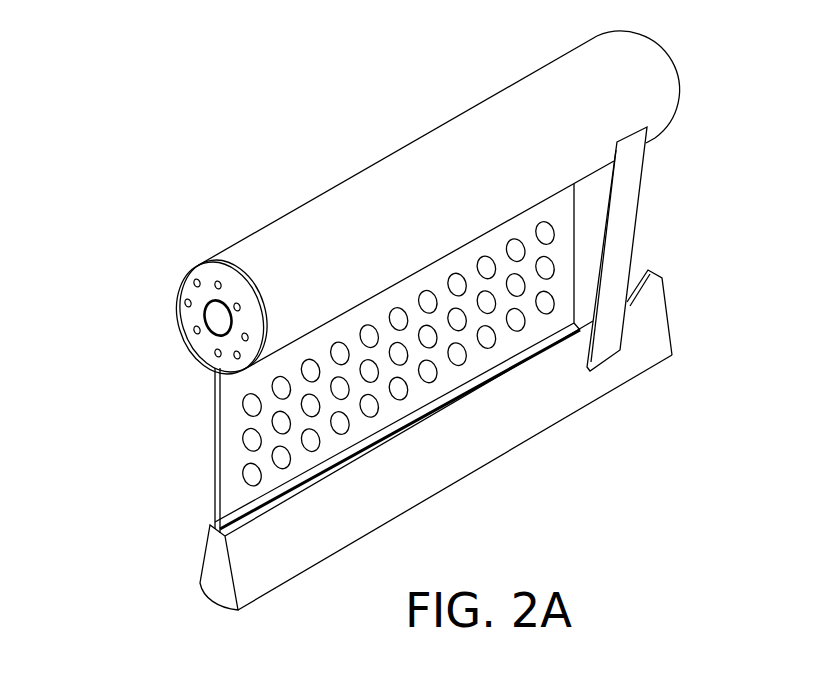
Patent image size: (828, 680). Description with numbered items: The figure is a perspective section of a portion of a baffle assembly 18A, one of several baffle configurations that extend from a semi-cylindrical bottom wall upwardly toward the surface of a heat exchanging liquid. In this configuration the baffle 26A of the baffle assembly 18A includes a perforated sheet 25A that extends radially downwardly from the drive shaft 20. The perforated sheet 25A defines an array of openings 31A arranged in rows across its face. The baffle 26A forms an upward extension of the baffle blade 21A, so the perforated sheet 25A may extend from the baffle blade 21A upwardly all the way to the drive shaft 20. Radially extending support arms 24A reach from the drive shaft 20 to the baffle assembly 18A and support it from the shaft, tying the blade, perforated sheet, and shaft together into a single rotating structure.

The drive shaft 20 is at (421, 208).
The radially extending support arm 24A is at (681, 249).
The perforated sheet 25A is at (326, 381).
The openings 31A is at (316, 353).
The baffle 26A is at (326, 450).
The baffle assembly 18A is at (381, 463).
The baffle blade 21A is at (155, 590).